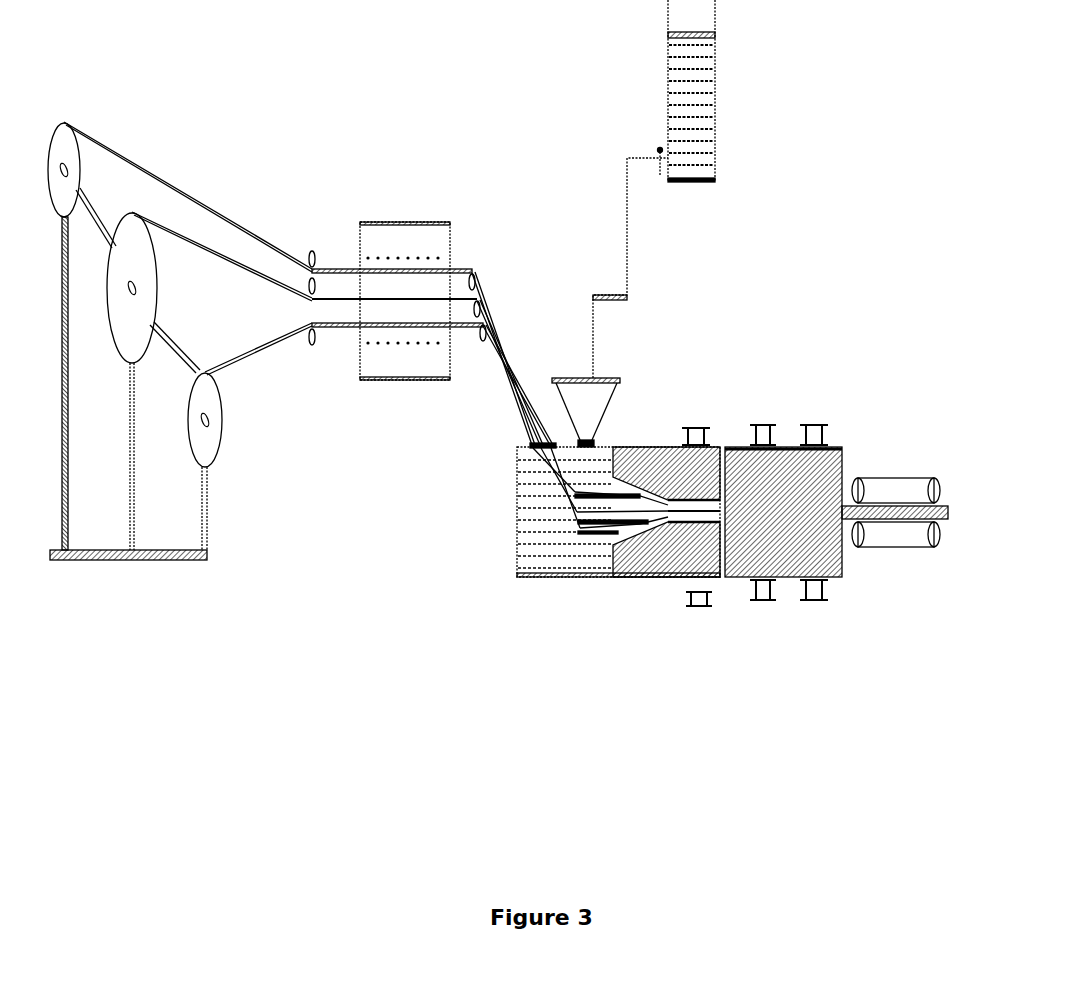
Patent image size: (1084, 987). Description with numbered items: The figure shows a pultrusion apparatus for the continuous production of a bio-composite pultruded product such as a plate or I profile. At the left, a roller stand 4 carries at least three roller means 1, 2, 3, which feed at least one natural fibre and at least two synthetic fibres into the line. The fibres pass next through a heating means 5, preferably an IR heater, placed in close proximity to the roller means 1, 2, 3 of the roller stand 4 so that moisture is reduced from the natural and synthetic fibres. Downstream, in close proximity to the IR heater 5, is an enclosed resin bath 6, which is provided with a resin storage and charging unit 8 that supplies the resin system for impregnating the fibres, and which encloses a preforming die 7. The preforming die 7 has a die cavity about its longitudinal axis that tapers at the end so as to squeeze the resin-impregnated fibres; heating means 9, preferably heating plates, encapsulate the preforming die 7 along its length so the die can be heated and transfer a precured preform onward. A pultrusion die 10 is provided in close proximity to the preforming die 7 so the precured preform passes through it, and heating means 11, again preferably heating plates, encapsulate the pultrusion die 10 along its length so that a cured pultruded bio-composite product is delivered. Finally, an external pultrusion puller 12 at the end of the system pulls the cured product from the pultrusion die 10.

The roller means 1 is at (68, 420).
The roller means 2 is at (135, 480).
The roller means 3 is at (207, 520).
The roller stand 4 is at (155, 560).
The heating means 5 is at (442, 218).
The enclosed resin bath 6 is at (612, 445).
The preforming die 7 is at (673, 445).
The resin storage and charging unit 8 is at (715, 106).
The heating means 9 is at (697, 428).
The pultrusion die 10 is at (743, 448).
The heating means 11 is at (770, 427).
The external pultrusion puller 12 is at (897, 475).